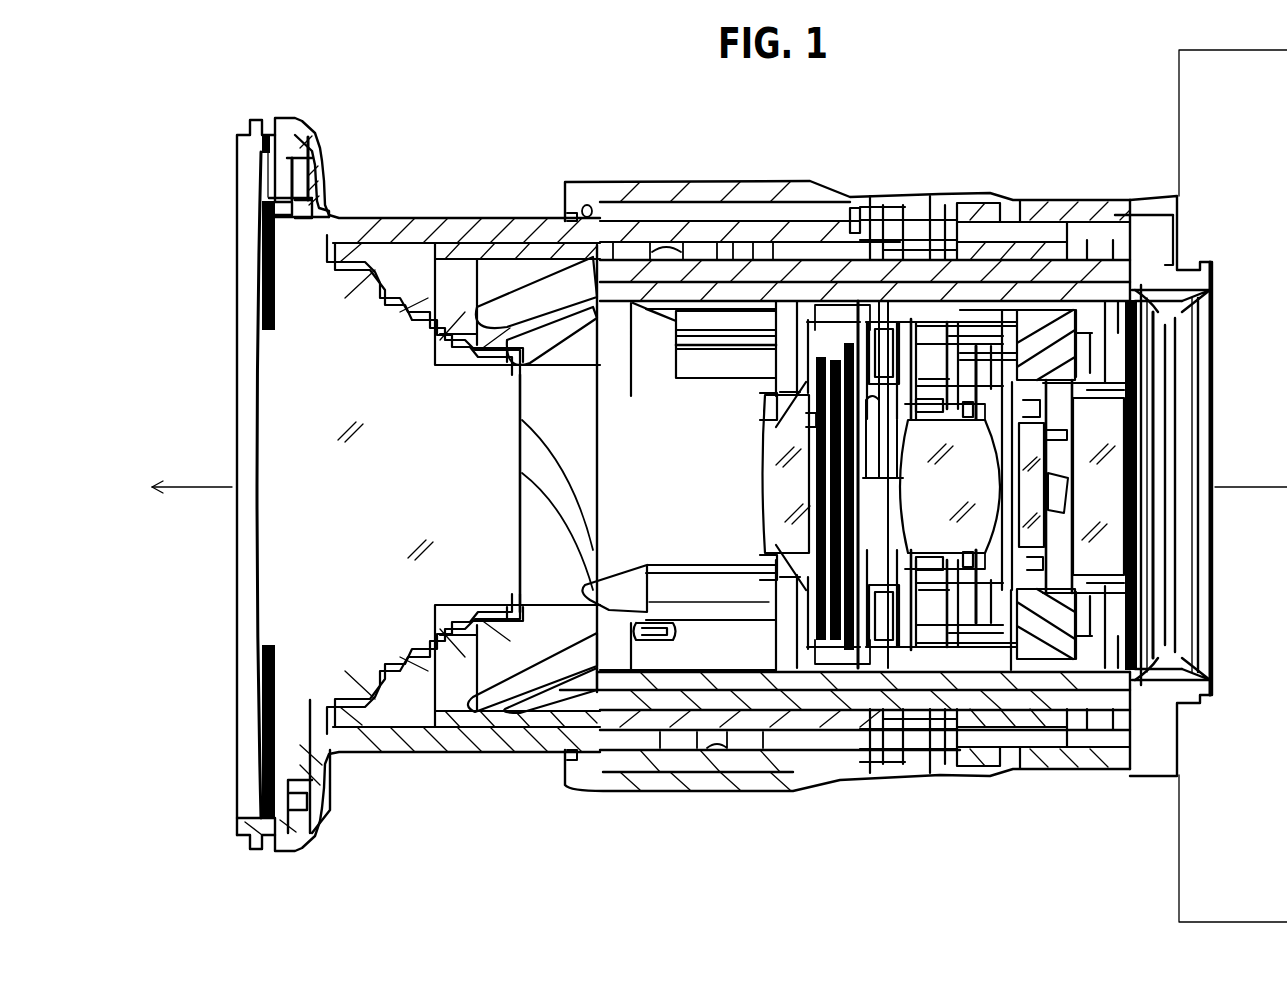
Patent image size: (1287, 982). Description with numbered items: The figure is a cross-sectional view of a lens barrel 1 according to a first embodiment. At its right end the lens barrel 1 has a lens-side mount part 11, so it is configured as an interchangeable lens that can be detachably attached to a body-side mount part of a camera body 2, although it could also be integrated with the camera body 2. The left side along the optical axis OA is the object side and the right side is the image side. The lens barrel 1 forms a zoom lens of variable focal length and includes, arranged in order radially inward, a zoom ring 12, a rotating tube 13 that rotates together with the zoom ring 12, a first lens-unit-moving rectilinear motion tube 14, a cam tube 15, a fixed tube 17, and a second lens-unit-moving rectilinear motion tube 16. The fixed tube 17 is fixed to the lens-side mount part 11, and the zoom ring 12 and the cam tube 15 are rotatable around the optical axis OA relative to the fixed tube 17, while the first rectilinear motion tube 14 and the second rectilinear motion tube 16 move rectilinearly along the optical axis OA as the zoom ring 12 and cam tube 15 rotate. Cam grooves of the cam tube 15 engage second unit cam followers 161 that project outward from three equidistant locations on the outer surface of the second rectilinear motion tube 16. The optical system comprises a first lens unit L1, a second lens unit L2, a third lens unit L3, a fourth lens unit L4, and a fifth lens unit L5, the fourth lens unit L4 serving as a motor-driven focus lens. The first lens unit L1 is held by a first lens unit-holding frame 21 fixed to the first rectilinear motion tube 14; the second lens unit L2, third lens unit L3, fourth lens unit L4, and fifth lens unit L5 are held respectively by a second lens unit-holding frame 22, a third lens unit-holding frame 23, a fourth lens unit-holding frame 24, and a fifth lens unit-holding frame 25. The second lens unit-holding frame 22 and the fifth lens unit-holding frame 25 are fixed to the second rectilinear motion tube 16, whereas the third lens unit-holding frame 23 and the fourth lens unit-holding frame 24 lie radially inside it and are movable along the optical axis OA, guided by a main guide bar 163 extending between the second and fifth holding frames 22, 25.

The lens barrel 1 is at (420, 66).
The camera body 2 is at (1233, 50).
The optical axis OA is at (696, 488).
The lens-side mount part 11 is at (1187, 278).
The zoom ring 12 is at (760, 197).
The rotating tube 13 is at (843, 212).
The first lens-unit-moving rectilinear motion tube 14 is at (625, 235).
The cam tube 15 is at (525, 247).
The second lens-unit-moving rectilinear motion tube 16 is at (955, 292).
The fixed tube 17 is at (705, 270).
The first lens unit-holding frame 21 is at (420, 645).
The second lens unit-holding frame 22 is at (810, 560).
The third lens unit-holding frame 23 is at (943, 570).
The fourth lens unit-holding frame 24 is at (1015, 590).
The fifth lens unit-holding frame 25 is at (1100, 590).
The second unit cam follower 161 is at (600, 255).
The main guide bar 163 is at (875, 335).
The first lens unit L1 is at (365, 497).
The second lens unit L2 is at (785, 500).
The third lens unit L3 is at (925, 500).
The fourth lens unit L4 is at (1030, 500).
The fifth lens unit L5 is at (1092, 500).